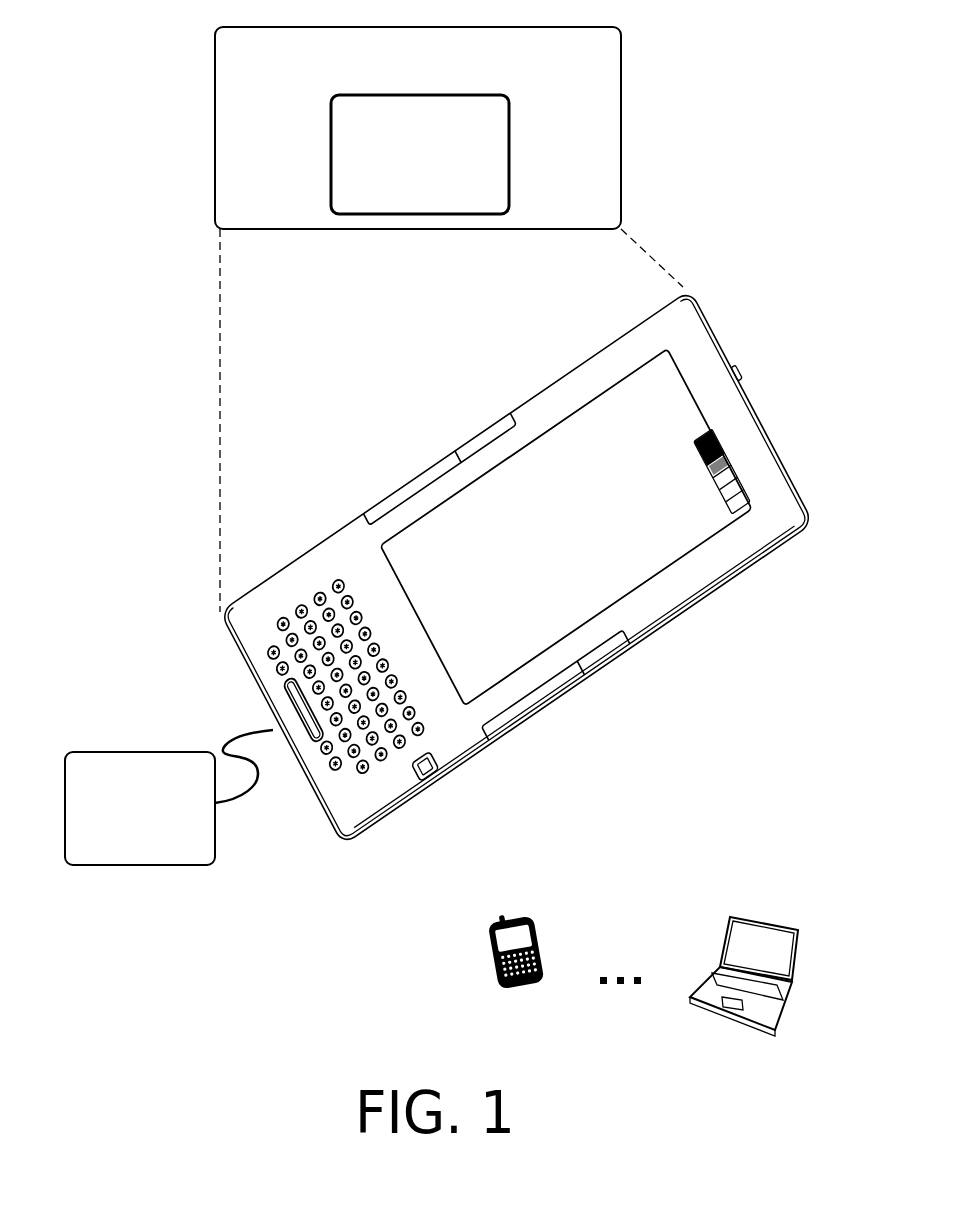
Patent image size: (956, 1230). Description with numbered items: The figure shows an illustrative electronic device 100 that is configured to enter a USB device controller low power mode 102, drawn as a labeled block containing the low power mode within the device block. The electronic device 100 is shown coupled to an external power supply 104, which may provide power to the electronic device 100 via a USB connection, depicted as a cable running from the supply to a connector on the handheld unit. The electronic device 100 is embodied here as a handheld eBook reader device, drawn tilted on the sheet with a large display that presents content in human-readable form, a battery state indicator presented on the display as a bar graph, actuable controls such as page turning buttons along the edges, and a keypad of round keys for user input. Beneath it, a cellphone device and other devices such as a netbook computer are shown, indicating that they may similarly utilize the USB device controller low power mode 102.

The electronic device 100 is at (403, 78).
The USB device controller low power mode 102 is at (405, 198).
The external power supply 104 is at (123, 841).